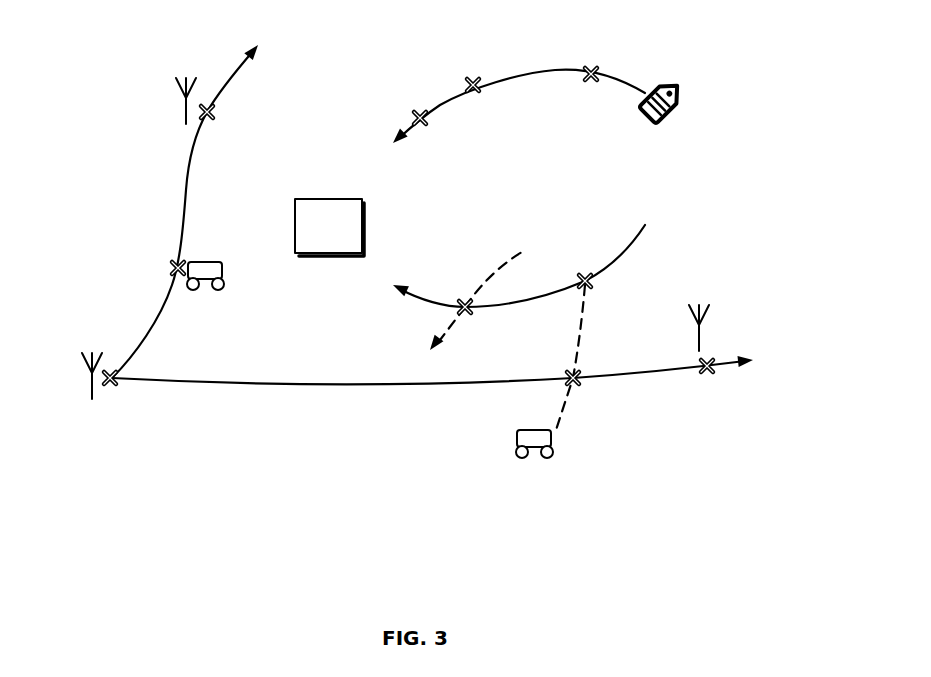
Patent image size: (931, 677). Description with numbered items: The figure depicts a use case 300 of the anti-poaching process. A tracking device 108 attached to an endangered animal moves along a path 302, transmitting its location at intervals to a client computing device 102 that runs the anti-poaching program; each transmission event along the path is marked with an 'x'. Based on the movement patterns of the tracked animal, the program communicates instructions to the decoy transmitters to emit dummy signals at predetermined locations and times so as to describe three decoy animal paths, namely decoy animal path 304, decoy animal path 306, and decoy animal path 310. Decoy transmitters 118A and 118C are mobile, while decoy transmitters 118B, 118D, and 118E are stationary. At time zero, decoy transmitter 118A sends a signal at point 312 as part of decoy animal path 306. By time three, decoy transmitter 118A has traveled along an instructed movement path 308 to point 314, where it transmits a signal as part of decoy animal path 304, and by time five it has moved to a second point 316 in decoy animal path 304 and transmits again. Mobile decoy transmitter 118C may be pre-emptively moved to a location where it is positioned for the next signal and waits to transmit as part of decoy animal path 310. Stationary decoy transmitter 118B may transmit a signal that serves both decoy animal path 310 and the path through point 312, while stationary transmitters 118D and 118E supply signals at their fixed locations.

The use case 300 is at (137, 74).
The client computing device 102 is at (329, 227).
The tracking device 108 is at (665, 113).
The decoy transmitter 118A is at (539, 458).
The decoy transmitter 118B is at (90, 393).
The decoy transmitter 118C is at (206, 289).
The decoy transmitter 118D is at (170, 102).
The decoy transmitter 118E is at (727, 338).
The path 302 is at (517, 105).
The decoy animal path 304 is at (518, 271).
The decoy animal path 306 is at (433, 375).
The instructed movement path 308 is at (582, 277).
The decoy animal path 310 is at (187, 210).
The signal point 312 is at (577, 383).
The point 314 is at (590, 281).
The second point 316 is at (463, 303).